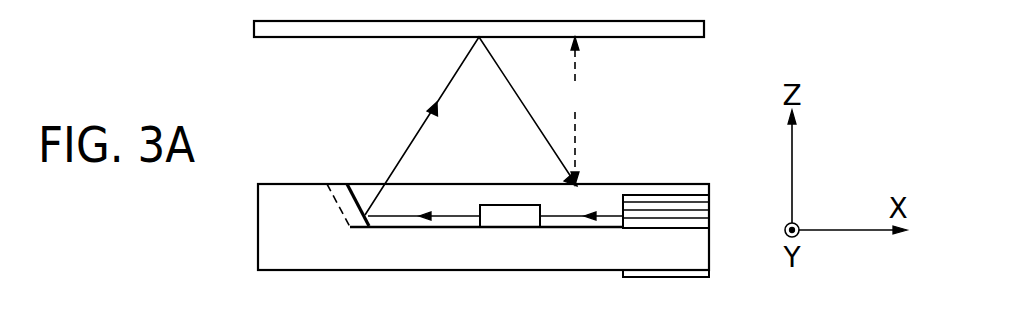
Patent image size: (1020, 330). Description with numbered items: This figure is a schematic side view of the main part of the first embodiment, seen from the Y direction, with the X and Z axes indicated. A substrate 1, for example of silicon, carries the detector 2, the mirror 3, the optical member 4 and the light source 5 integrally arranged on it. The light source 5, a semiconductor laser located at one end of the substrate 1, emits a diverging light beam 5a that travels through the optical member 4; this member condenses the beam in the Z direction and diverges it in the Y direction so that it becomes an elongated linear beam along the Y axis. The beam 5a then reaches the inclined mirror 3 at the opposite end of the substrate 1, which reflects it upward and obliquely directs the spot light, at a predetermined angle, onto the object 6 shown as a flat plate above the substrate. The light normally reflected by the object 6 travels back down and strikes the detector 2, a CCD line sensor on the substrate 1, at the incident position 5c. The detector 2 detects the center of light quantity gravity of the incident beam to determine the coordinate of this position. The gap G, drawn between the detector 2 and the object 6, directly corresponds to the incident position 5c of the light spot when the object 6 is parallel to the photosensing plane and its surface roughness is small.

The substrate 1 is at (258, 200).
The detector 2 is at (657, 184).
The mirror 3 is at (350, 207).
The optical member 4 is at (510, 221).
The light source 5 is at (717, 194).
The light beam 5a is at (413, 140).
The incident position 5c is at (578, 185).
The object 6 is at (598, 30).
The gap G is at (575, 111).